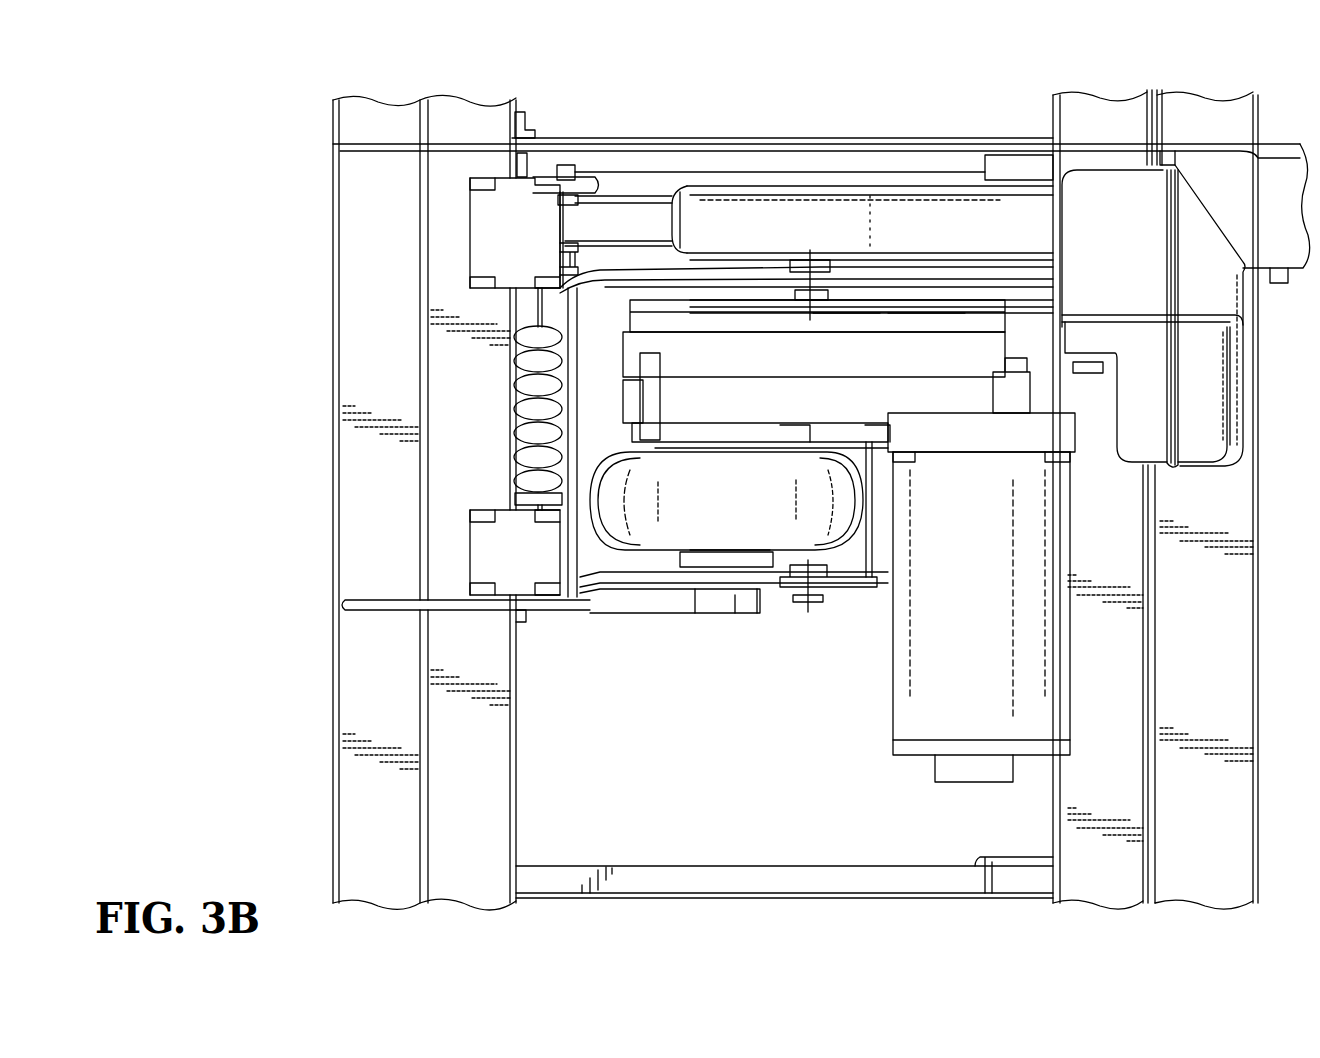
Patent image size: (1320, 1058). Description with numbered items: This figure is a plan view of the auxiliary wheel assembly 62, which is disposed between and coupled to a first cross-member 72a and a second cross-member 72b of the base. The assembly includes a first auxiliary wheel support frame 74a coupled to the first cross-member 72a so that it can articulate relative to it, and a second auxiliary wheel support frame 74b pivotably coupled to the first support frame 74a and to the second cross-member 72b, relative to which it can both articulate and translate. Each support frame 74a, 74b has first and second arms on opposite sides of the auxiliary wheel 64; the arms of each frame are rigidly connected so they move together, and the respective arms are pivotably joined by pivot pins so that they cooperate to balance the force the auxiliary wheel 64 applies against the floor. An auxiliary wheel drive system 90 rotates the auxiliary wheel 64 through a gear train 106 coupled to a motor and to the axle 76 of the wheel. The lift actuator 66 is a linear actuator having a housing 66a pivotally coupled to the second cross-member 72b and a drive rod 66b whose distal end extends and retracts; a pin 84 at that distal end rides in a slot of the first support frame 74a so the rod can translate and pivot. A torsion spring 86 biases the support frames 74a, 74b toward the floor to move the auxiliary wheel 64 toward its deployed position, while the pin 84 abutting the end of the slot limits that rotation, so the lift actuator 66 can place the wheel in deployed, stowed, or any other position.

The auxiliary wheel assembly 62 is at (1008, 94).
The first cross-member 72a is at (463, 118).
The second cross-member 72b is at (1118, 118).
The pin 84 is at (570, 165).
The torsion spring 86 is at (512, 318).
The first auxiliary wheel support frame 74a is at (688, 265).
The second auxiliary wheel support frame 74b is at (932, 270).
The lift actuator 66 is at (777, 208).
The housing 66a is at (878, 205).
The drive rod 66b is at (621, 205).
The gear train 106 is at (712, 355).
The auxiliary wheel drive system 90 is at (825, 368).
The auxiliary wheel 64 is at (728, 512).
The axle 76 is at (695, 565).